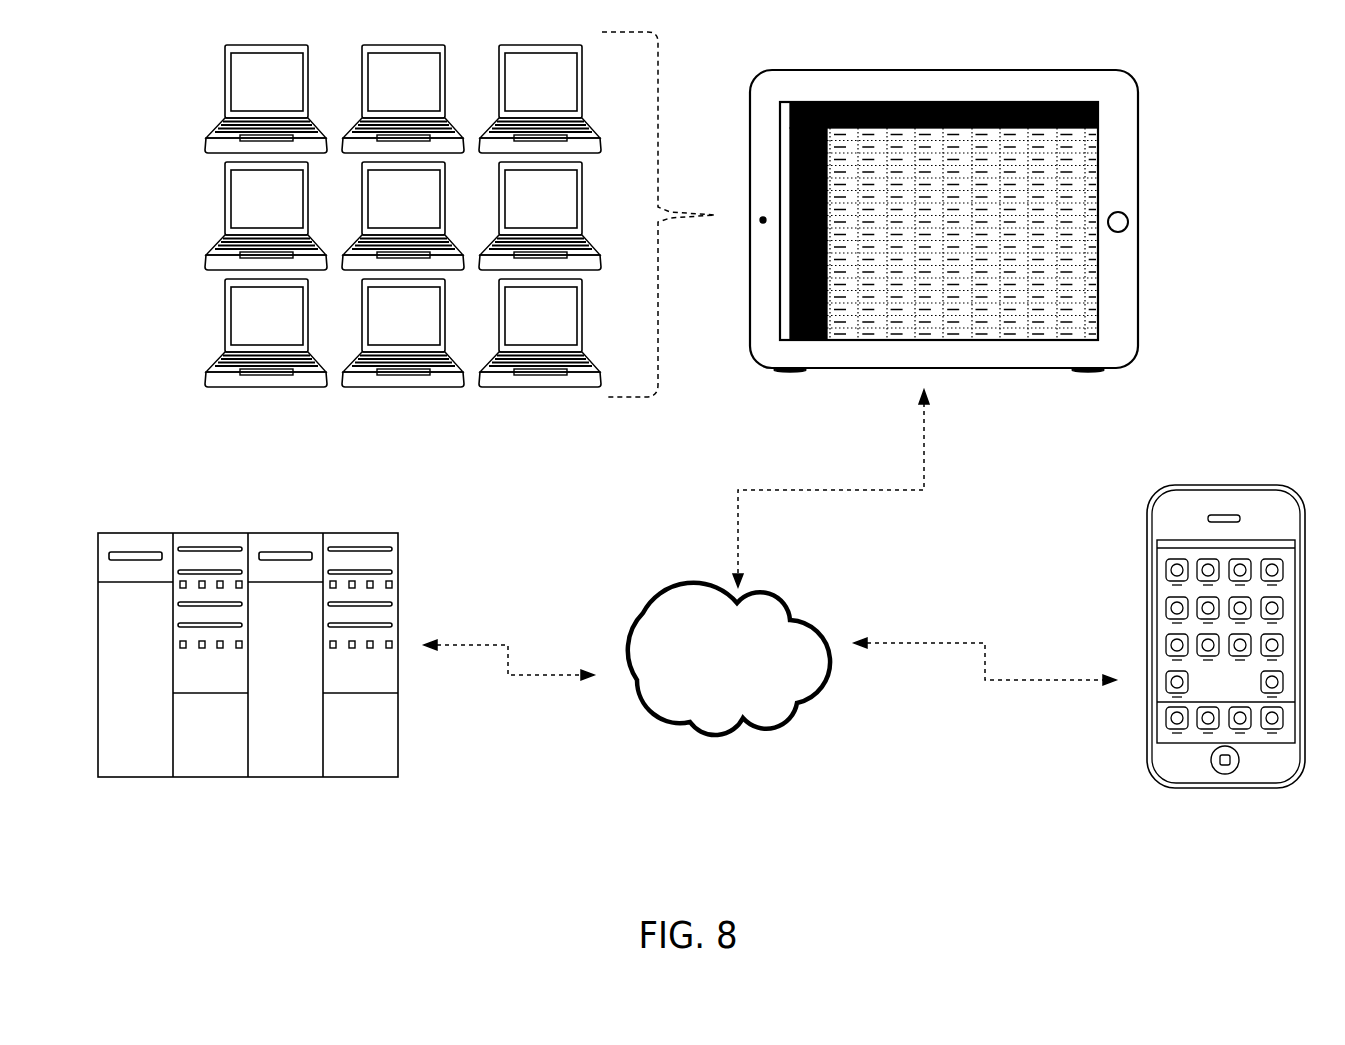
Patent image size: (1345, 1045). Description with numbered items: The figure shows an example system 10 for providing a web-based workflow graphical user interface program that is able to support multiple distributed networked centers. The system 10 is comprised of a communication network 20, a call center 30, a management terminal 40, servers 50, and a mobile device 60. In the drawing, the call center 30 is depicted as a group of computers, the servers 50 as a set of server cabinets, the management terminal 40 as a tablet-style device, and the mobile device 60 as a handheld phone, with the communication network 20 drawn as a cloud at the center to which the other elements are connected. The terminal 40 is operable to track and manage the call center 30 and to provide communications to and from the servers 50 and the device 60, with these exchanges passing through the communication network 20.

The system 10 is at (701, 410).
The communication network 20 is at (712, 700).
The call center 30 is at (396, 215).
The management terminal 40 is at (1104, 354).
The servers 50 is at (356, 770).
The mobile device 60 is at (1259, 772).